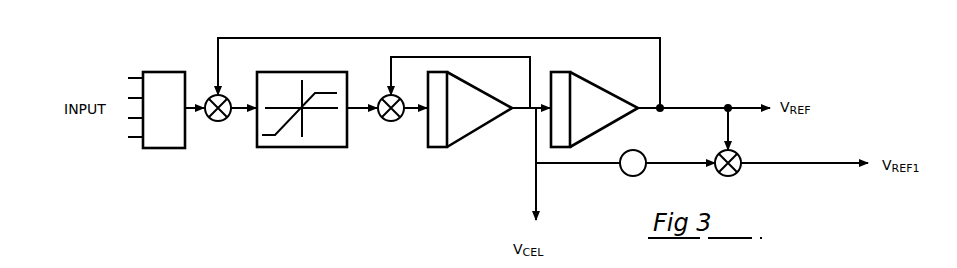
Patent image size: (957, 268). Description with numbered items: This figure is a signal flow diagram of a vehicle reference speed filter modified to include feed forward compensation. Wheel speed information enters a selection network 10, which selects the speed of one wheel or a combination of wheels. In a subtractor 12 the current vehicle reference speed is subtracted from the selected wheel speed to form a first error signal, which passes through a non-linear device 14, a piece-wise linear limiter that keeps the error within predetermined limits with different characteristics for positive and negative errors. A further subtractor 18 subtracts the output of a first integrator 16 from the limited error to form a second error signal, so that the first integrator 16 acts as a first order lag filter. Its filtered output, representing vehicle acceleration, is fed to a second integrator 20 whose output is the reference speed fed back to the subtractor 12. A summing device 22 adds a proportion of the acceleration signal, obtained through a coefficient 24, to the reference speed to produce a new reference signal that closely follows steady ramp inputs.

The selection network 10 is at (166, 78).
The subtractor 12 is at (222, 91).
The non-linear device 14 is at (347, 80).
The first integrator 16 is at (470, 109).
The further subtractor 18 is at (396, 118).
The second integrator 20 is at (594, 109).
The summing device 22 is at (740, 153).
The coefficient 24 is at (643, 153).